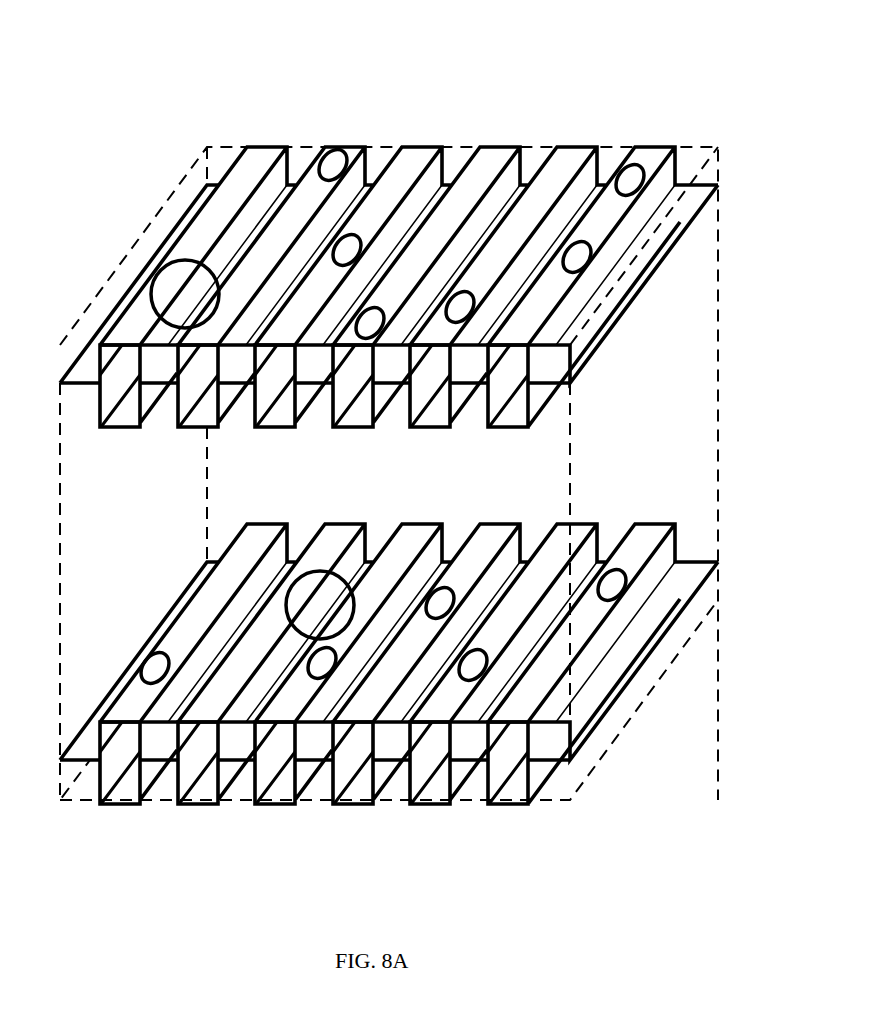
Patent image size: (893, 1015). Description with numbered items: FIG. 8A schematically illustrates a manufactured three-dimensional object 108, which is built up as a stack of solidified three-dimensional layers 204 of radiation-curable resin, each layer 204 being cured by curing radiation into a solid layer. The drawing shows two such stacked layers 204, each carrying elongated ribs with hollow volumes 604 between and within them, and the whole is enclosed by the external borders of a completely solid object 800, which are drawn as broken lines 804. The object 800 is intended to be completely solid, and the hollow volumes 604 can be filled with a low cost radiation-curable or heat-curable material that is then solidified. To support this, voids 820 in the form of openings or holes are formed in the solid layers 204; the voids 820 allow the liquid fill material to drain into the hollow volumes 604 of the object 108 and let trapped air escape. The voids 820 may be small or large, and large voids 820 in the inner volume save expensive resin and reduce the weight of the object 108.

The object 800 is at (267, 84).
The 3D object 108 is at (187, 208).
The solidified 3D layers 204 is at (567, 160).
The hollow volumes 604 is at (433, 418).
The voids 820 is at (327, 157).
The broken lines 804 is at (568, 412).